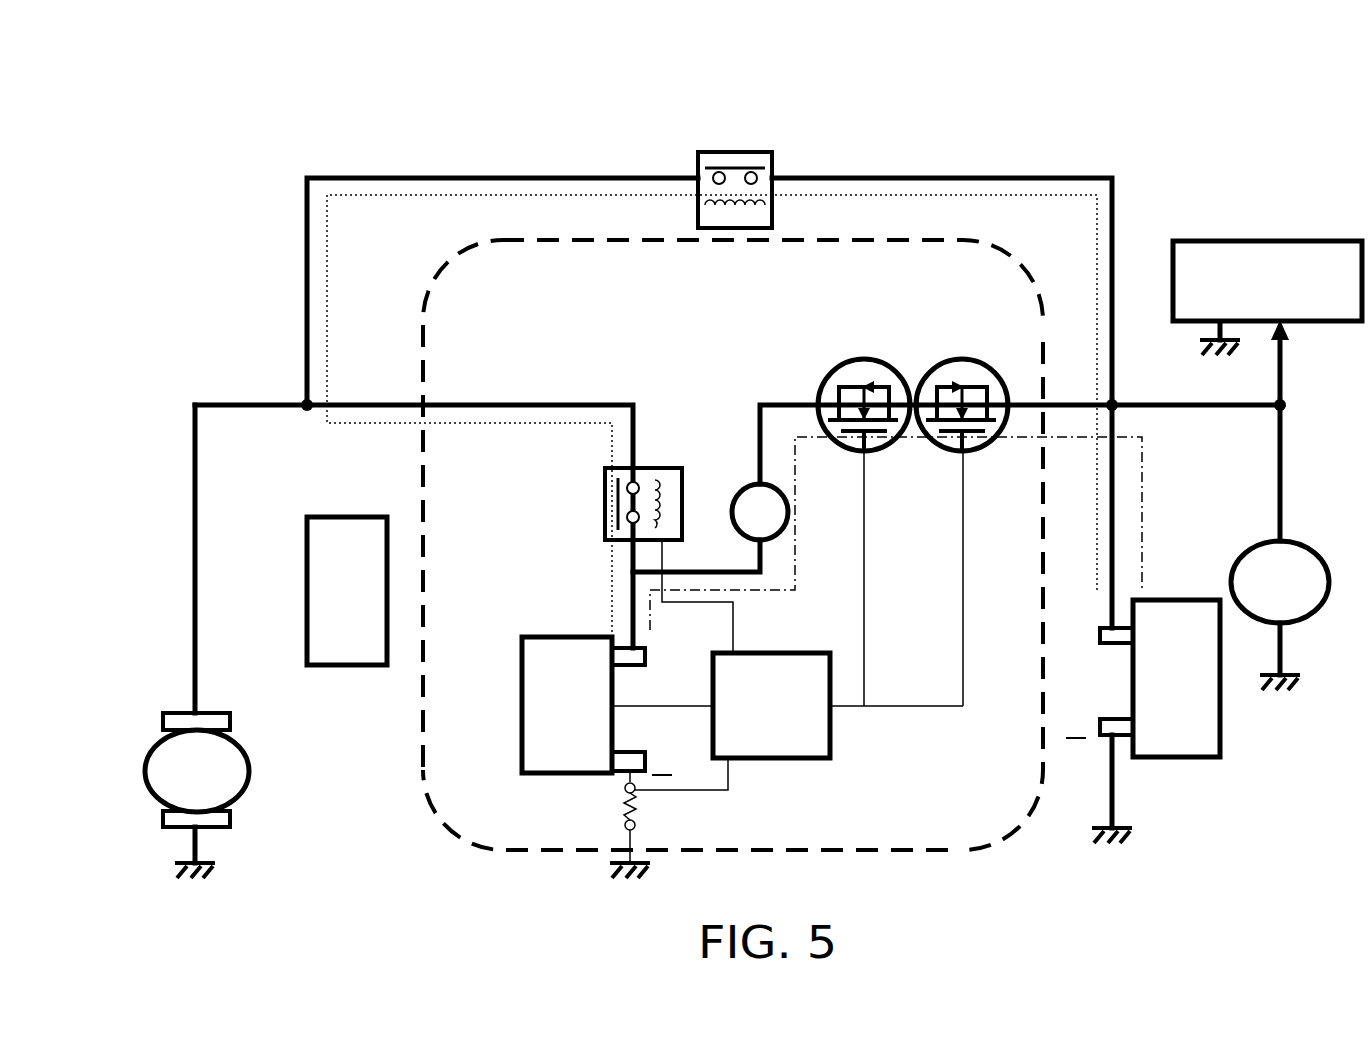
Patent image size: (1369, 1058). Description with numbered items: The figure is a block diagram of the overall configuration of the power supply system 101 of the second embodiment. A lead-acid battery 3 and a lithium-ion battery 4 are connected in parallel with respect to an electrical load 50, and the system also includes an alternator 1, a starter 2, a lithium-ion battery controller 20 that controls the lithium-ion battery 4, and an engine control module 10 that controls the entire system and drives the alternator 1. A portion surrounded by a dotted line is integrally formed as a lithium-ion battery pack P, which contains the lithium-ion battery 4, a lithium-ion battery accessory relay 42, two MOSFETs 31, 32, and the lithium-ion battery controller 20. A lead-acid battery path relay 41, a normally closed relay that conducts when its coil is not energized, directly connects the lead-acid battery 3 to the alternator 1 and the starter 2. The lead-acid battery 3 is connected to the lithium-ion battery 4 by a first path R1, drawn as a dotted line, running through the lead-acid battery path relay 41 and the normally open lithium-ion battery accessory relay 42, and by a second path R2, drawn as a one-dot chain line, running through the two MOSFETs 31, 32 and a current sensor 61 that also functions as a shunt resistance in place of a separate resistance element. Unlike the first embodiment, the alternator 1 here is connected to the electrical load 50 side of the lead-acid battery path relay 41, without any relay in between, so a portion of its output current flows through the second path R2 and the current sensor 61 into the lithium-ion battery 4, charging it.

The power supply system 101 is at (1186, 110).
The lead-acid battery path relay 41 is at (772, 165).
The first path R1 is at (966, 195).
The second path R2 is at (1145, 482).
The electrical load 50 is at (1268, 240).
The MOSFET 32 is at (870, 360).
The MOSFET 31 is at (962, 360).
The lithium-ion battery accessory relay 42 is at (664, 468).
The current sensor 61 is at (788, 512).
The engine control module 10 is at (345, 517).
The starter 2 is at (152, 745).
The lithium-ion battery 4 is at (552, 637).
The lithium-ion battery controller 20 is at (808, 758).
The lead-acid battery 3 is at (1170, 600).
The alternator 1 is at (1312, 608).
The lithium-ion battery pack P is at (998, 850).